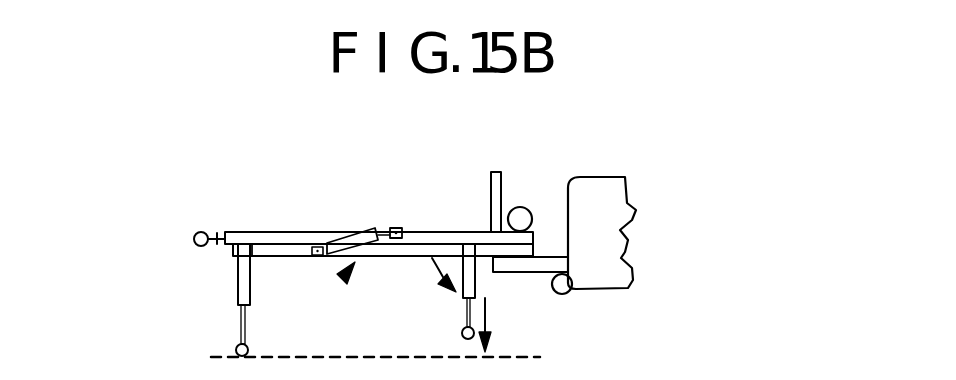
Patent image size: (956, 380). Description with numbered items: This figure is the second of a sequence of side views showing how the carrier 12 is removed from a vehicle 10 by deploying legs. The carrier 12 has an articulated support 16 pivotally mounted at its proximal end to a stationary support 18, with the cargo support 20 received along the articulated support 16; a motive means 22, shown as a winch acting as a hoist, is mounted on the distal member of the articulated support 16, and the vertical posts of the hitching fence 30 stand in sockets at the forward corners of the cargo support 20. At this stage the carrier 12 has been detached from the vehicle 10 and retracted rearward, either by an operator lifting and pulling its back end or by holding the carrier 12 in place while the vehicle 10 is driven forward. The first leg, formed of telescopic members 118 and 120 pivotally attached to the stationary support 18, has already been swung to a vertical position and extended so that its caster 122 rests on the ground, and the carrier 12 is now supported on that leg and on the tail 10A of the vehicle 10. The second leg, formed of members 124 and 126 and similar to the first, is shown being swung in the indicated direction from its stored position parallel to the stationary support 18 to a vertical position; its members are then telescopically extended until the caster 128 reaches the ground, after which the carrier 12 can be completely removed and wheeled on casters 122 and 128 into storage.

The vehicle 10 is at (603, 176).
The tail 10A is at (560, 257).
The carrier 12 is at (342, 281).
The articulated support 16 is at (260, 232).
The stationary support 18 is at (418, 247).
The cargo support 20 is at (217, 233).
The motive means 22 is at (531, 208).
The hitching fence 30 is at (490, 197).
The telescopic member 118 is at (238, 282).
The telescopic member 120 is at (238, 327).
The caster 122 is at (250, 351).
The leg member 124 is at (480, 287).
The leg member 126 is at (466, 309).
The caster 128 is at (462, 334).